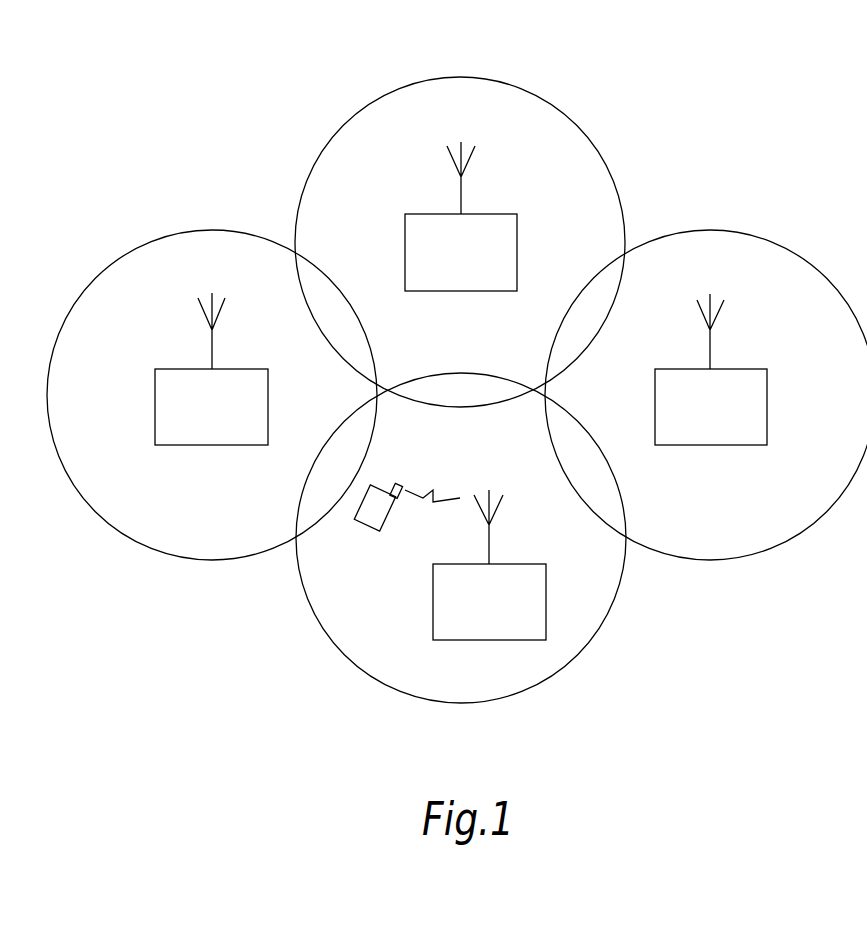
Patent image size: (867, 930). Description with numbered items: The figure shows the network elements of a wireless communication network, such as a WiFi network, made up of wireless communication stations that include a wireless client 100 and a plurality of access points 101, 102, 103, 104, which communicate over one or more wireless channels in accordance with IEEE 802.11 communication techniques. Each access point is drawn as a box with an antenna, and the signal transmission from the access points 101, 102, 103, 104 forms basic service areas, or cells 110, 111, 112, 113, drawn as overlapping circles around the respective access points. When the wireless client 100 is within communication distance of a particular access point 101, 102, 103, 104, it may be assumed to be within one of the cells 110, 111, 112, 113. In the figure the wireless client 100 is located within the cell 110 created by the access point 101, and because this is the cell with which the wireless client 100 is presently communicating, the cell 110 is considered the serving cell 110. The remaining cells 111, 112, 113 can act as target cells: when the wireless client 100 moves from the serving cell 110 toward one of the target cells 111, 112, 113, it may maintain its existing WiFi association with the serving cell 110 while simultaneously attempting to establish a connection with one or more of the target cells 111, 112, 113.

The wireless client 100 is at (366, 531).
The access point 101 is at (556, 546).
The access point 102 is at (778, 351).
The access point 103 is at (530, 196).
The access point 104 is at (280, 351).
The serving cell 110 is at (461, 703).
The cell 111 is at (710, 230).
The cell 112 is at (461, 77).
The cell 113 is at (212, 230).